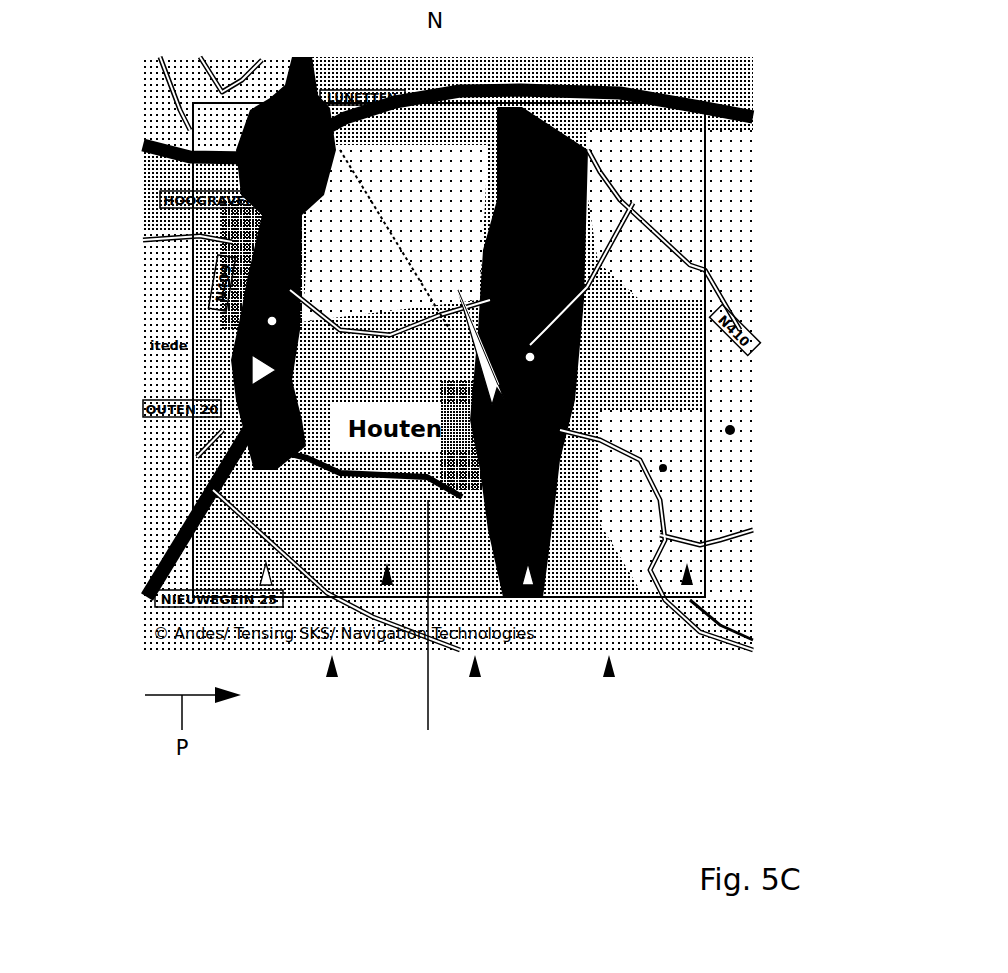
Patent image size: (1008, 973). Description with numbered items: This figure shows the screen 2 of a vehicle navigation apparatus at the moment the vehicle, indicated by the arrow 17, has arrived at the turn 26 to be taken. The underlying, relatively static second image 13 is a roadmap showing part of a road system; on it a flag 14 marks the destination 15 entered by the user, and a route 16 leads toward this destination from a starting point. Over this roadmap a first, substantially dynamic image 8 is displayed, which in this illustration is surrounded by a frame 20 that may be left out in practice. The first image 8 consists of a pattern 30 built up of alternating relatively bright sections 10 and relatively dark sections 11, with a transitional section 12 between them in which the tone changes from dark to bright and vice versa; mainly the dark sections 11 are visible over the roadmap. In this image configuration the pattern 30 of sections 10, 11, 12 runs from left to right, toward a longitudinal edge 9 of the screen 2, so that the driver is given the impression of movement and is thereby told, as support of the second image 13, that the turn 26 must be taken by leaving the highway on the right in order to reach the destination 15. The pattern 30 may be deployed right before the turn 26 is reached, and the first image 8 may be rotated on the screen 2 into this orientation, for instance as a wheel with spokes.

The screen 2 is at (810, 659).
The first image 8 is at (667, 468).
The longitudinal edge 9 is at (476, 330).
The relatively bright sections 10 is at (387, 585).
The relatively dark sections 11 is at (266, 585).
The transitional section 12 is at (332, 677).
The second image 13 is at (735, 430).
The flag 14 is at (535, 357).
The destination 15 is at (458, 287).
The route 16 is at (267, 321).
The arrow 17 is at (252, 370).
The frame 20 is at (708, 505).
The turn 26 is at (188, 473).
The pattern 30 is at (652, 140).